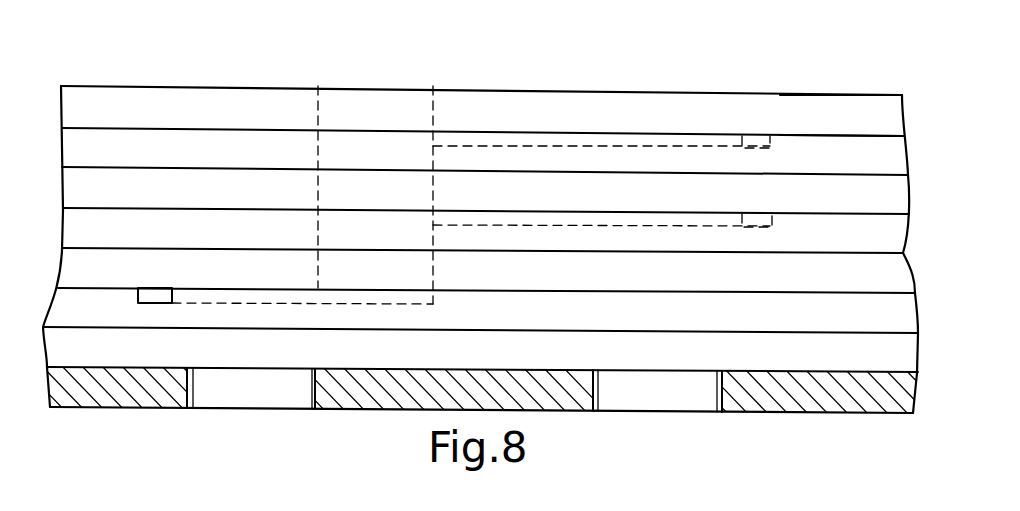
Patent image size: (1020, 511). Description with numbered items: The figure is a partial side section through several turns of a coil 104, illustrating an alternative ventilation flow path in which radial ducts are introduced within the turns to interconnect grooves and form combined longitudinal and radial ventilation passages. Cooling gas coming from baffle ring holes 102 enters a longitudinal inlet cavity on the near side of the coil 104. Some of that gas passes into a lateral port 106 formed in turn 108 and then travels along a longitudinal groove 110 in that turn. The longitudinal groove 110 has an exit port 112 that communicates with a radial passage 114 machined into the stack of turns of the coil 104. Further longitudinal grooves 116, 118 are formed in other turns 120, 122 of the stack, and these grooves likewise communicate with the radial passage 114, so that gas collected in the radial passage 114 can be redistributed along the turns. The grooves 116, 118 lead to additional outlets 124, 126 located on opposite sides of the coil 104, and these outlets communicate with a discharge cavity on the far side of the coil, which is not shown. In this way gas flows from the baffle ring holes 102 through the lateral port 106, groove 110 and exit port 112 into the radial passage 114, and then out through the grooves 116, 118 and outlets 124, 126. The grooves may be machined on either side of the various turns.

The baffle ring holes 102 is at (277, 390).
The coil 104 is at (229, 78).
The lateral port 106 is at (158, 298).
The turn 108 is at (687, 317).
The longitudinal groove 110 is at (274, 298).
The exit port 112 is at (402, 303).
The radial passage 114 is at (372, 128).
The longitudinal groove 116 is at (473, 146).
The longitudinal groove 118 is at (487, 222).
The turn 120 is at (795, 147).
The turn 122 is at (900, 205).
The outlet 124 is at (753, 222).
The outlet 126 is at (757, 140).